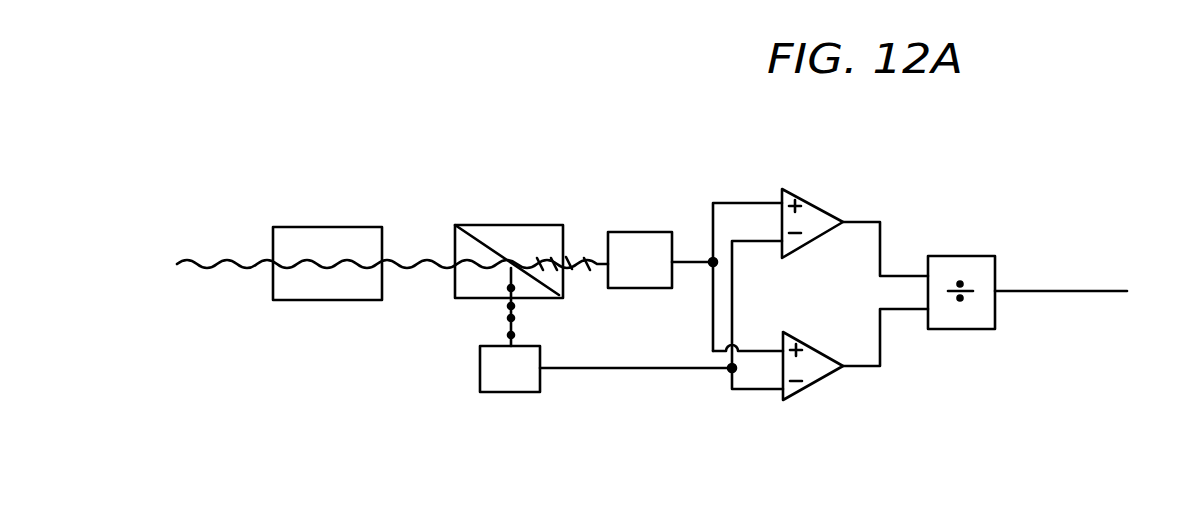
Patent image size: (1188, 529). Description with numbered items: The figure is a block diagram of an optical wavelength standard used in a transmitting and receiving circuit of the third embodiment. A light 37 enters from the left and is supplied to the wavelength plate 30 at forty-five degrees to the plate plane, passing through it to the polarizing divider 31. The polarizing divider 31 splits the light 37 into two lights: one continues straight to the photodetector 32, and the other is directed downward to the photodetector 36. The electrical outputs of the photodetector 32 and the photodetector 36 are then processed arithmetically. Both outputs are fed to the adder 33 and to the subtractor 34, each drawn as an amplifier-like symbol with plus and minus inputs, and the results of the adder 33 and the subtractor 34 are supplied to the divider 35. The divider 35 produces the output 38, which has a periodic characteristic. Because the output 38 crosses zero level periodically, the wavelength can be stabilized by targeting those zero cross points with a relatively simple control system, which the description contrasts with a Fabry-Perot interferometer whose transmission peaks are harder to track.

The wavelength plate 30 is at (327, 227).
The polarizing divider 31 is at (505, 225).
The photodetector 32 is at (648, 232).
The adder 33 is at (827, 211).
The subtractor 34 is at (818, 378).
The divider 35 is at (970, 256).
The photodetector 36 is at (510, 393).
The light 37 is at (206, 270).
The output 38 is at (1073, 291).